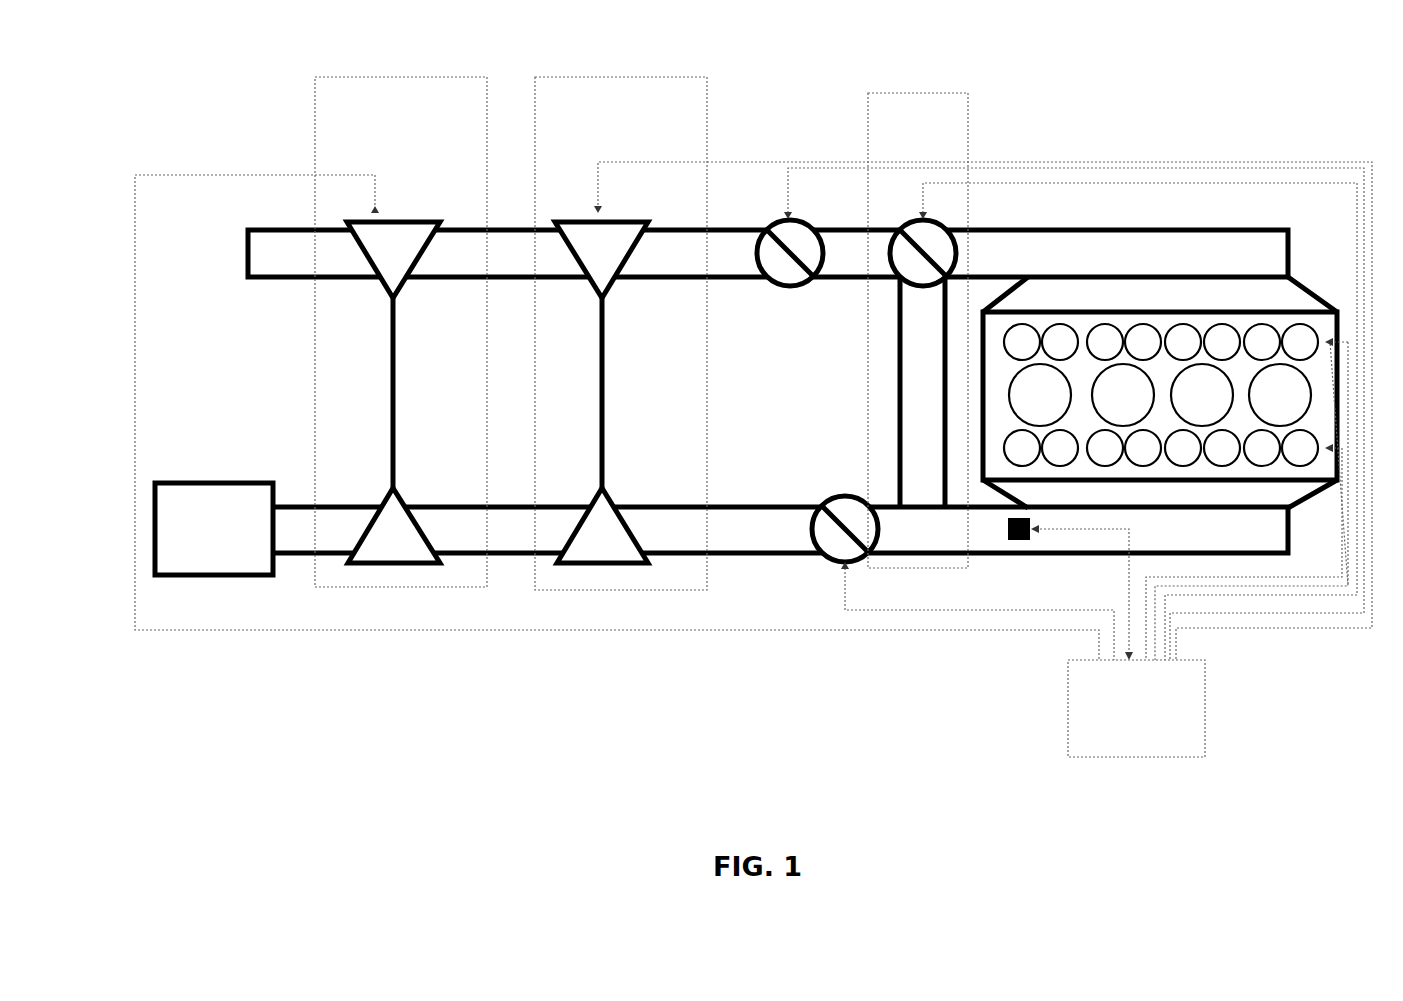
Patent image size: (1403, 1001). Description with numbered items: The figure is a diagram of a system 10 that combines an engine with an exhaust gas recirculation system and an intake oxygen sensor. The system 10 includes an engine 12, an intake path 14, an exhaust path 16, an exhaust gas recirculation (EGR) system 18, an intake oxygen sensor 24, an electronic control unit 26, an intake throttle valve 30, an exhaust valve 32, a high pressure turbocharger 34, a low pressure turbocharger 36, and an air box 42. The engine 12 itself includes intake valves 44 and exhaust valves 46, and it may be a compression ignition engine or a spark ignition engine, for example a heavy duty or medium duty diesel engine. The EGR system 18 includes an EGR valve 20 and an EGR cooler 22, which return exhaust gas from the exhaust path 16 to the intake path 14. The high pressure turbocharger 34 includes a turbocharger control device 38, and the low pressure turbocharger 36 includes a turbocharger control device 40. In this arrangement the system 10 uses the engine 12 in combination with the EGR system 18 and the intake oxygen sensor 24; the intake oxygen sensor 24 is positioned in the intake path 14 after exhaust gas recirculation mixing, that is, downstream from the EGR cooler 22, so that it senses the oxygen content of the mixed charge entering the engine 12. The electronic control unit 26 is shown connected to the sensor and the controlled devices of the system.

The system 10 is at (1272, 64).
The engine 12 is at (1305, 270).
The intake path 14 is at (740, 540).
The exhaust path 16 is at (1012, 232).
The exhaust gas recirculation (EGR) system 18 is at (918, 330).
The exhaust gas recirculation (EGR) valve 20 is at (938, 228).
The exhaust gas recirculation (EGR) cooler 22 is at (898, 418).
The intake oxygen sensor 24 is at (1020, 554).
The electronic control unit (ECU) 26 is at (1136, 708).
The intake throttle valve 30 is at (830, 497).
The exhaust valve 32 is at (805, 222).
The high pressure turbocharger 34 is at (621, 333).
The low pressure turbocharger 36 is at (401, 332).
The turbocharger control device 38 is at (617, 222).
The turbocharger control device 40 is at (432, 222).
The air box 42 is at (208, 482).
The intake valves 44 is at (1165, 478).
The exhaust valves 46 is at (1165, 313).